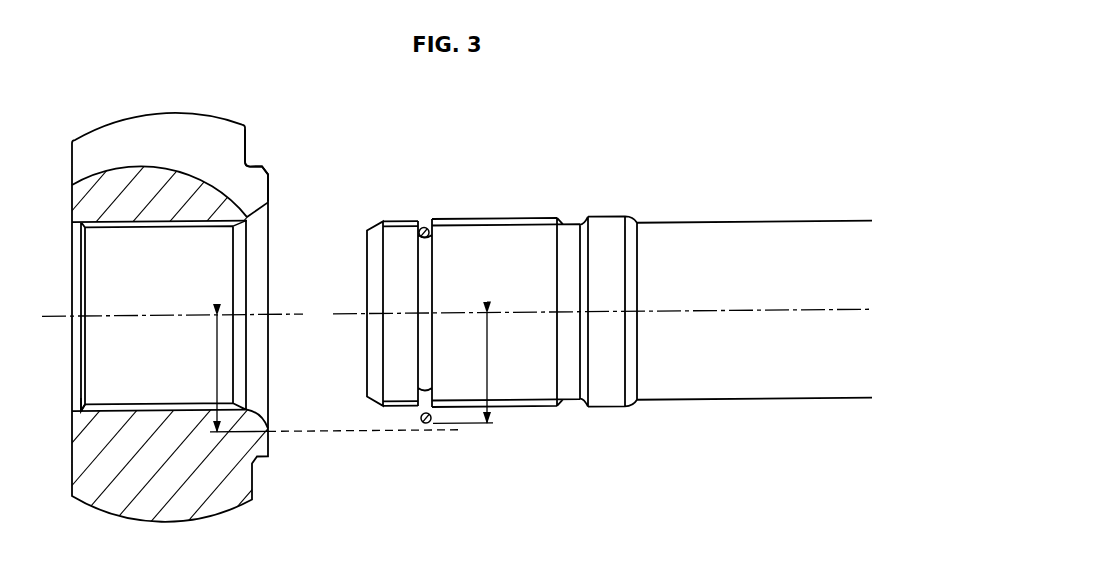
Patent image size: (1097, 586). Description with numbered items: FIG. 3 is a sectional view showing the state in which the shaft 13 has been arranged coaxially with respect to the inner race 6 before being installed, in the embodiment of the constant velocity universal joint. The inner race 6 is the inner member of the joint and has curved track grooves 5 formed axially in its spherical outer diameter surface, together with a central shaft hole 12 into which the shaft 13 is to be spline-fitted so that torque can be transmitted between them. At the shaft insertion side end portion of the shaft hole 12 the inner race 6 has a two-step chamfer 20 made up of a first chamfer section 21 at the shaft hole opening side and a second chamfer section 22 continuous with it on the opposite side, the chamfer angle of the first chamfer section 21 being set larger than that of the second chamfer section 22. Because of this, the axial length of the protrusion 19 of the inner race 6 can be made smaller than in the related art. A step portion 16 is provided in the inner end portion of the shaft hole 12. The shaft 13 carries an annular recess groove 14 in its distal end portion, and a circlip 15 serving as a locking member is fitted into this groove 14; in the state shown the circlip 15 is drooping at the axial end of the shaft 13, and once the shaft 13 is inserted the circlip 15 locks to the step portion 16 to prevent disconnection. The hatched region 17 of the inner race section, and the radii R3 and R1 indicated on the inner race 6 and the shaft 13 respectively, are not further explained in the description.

The inner race 6 is at (228, 106).
The track grooves 5 is at (117, 167).
The protrusion 19 is at (256, 174).
The first chamfer section 21 is at (264, 208).
The two-step chamfer 20 is at (262, 224).
The second chamfer section 22 is at (247, 221).
The shaft hole 12 is at (103, 284).
The step portion 16 is at (80, 404).
The bottom wall portion 17 is at (117, 398).
The shaft 13 is at (700, 198).
The annular recess groove 14 is at (430, 267).
The circlip 15 is at (423, 227).
The radius R3 is at (325, 372).
The radius R1 is at (474, 367).